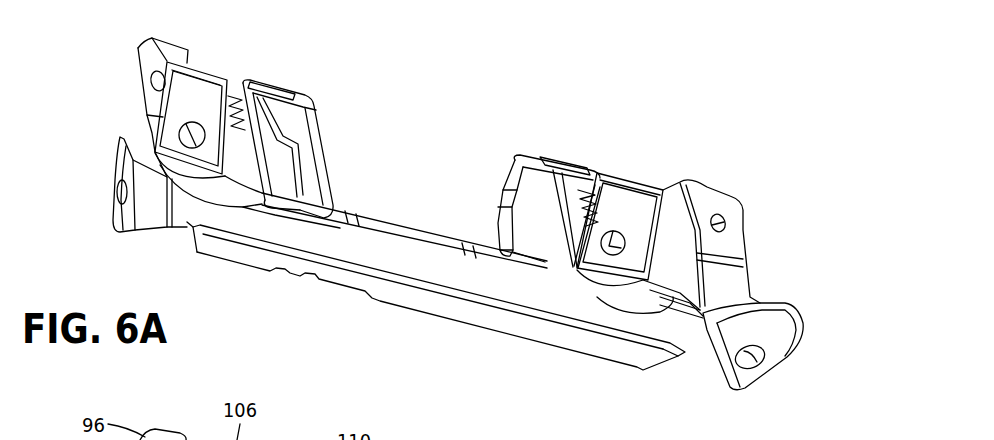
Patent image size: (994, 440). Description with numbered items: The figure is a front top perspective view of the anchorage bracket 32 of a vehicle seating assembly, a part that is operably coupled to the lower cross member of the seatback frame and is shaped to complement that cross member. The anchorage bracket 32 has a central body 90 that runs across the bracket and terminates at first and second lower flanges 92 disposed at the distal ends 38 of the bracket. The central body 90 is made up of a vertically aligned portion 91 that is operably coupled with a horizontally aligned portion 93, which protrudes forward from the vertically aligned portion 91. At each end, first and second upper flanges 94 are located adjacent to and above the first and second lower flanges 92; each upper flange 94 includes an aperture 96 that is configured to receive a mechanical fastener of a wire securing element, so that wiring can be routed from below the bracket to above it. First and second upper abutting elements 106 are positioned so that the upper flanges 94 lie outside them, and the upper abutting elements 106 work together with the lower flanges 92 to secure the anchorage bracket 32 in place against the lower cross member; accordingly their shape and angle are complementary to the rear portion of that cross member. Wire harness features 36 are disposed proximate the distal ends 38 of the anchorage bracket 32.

The anchorage bracket 32 is at (447, 317).
The wire harness features 36 is at (178, 238).
The distal ends 38 is at (117, 163).
The central body 90 is at (417, 260).
The vertically aligned portion 91 is at (348, 232).
The first and second lower flanges 92 is at (115, 220).
The horizontally aligned portion 93 is at (270, 253).
The first and second upper flanges 94 is at (147, 80).
The apertures 96 is at (147, 44).
The first and second upper abutting elements 106 is at (185, 107).